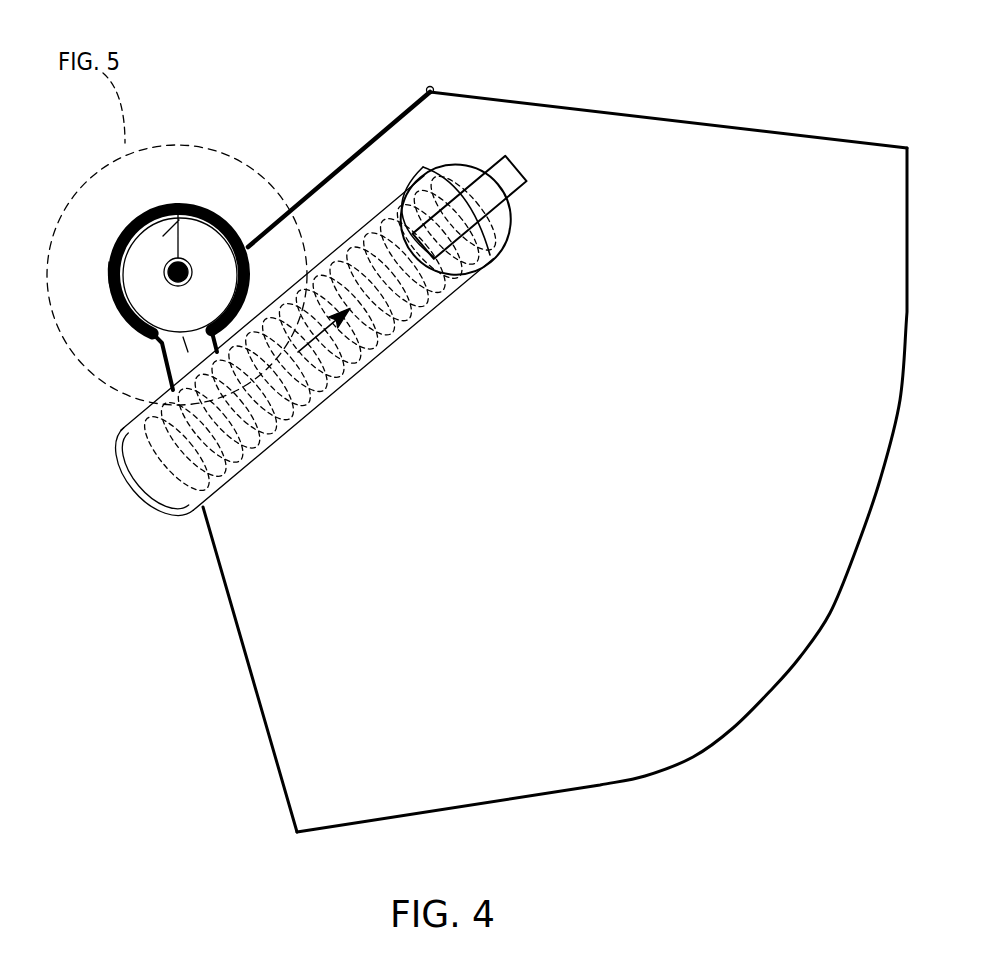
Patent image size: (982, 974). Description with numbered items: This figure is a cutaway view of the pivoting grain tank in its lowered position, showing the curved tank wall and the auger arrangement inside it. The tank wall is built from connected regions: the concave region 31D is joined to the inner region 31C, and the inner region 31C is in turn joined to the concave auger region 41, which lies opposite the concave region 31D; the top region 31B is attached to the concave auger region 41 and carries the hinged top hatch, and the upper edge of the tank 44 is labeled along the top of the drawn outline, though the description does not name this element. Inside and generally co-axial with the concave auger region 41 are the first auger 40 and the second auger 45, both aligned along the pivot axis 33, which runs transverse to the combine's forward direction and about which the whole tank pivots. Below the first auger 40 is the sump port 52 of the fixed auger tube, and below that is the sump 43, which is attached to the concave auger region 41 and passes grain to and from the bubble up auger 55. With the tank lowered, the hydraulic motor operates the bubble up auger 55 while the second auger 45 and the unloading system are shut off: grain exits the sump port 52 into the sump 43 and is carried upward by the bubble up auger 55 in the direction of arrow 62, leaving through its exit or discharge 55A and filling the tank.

The top region 31B is at (387, 125).
The inner region 31C is at (243, 657).
The concave region 31D is at (697, 760).
The pivot axis 33 is at (166, 265).
The first auger 40 is at (187, 210).
The concave auger region 41 is at (109, 278).
The sump 43 is at (190, 355).
The top frame edge 44 is at (703, 123).
The second auger 45 is at (424, 86).
The sump port 52 is at (183, 337).
The bubble up auger 55 is at (305, 425).
The exit or discharge 55A is at (510, 228).
The arrow 62 is at (360, 348).